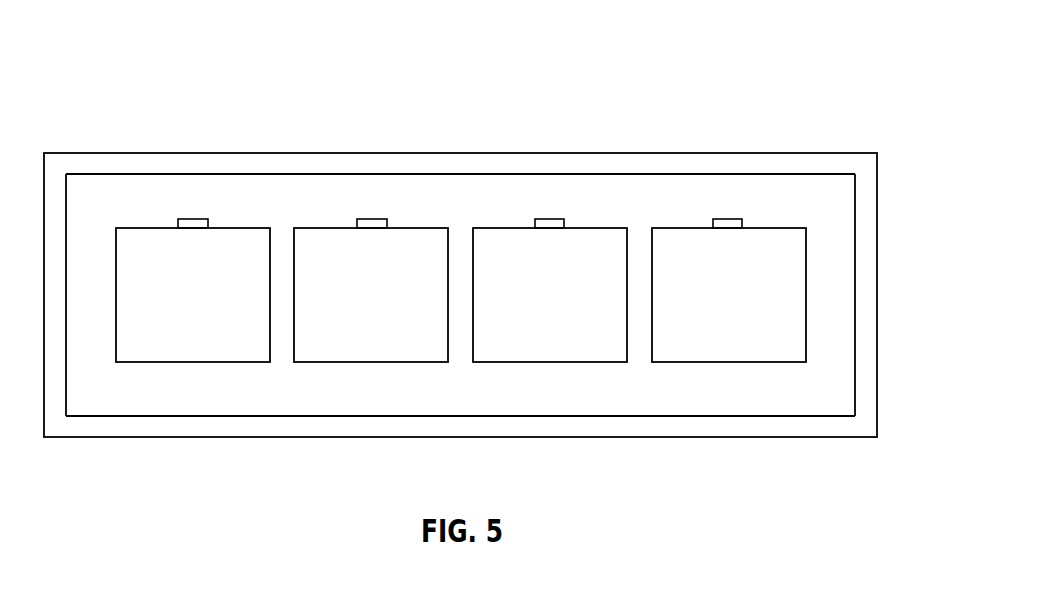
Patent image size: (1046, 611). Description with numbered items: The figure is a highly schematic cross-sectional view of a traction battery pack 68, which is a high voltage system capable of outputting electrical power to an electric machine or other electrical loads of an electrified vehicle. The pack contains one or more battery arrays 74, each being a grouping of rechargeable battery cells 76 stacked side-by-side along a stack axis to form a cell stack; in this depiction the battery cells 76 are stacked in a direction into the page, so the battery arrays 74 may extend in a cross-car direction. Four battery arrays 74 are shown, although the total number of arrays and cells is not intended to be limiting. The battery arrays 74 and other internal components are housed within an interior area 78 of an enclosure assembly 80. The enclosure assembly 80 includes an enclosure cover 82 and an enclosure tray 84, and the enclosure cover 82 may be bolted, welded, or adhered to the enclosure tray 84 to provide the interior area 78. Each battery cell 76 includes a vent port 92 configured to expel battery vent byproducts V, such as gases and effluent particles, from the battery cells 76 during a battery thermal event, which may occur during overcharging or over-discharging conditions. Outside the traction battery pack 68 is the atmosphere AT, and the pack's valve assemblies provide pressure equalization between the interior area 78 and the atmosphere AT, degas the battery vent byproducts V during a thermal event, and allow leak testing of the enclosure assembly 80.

The traction battery pack 68 is at (518, 66).
The battery array 74 is at (228, 206).
The battery cell 76 is at (179, 309).
The interior area 78 is at (457, 222).
The enclosure assembly 80 is at (897, 134).
The enclosure cover 82 is at (680, 163).
The enclosure tray 84 is at (609, 428).
The vent port 92 is at (178, 221).
The atmosphere AT is at (428, 57).
The battery vent byproducts V is at (186, 219).